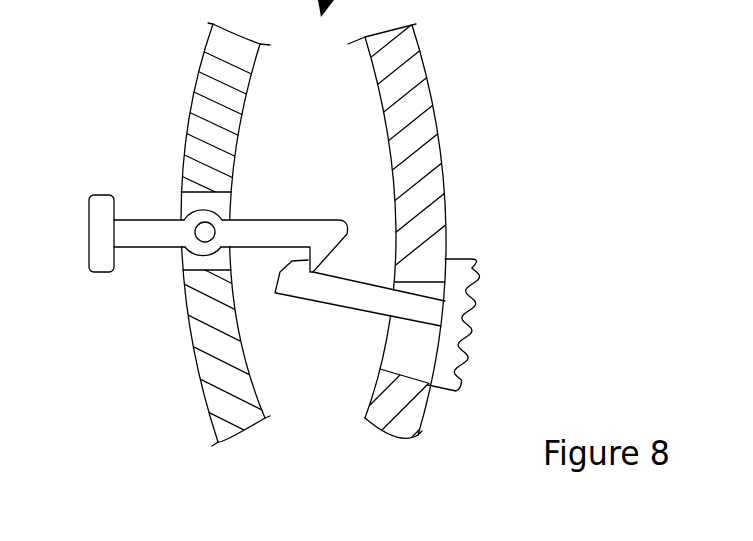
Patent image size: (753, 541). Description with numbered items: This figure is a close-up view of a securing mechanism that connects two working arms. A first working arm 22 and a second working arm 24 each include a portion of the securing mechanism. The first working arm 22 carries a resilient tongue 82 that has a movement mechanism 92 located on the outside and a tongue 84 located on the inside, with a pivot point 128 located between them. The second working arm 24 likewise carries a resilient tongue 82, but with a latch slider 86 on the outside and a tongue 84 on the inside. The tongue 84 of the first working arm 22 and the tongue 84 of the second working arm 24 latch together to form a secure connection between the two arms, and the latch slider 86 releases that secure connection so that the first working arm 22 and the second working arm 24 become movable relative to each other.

The first working arm 22 is at (204, 351).
The second working arm 24 is at (407, 417).
The resilient tongue 82 is at (268, 228).
The tongue 84 is at (307, 260).
The latch slider 86 is at (470, 306).
The movement mechanism 92 is at (112, 192).
The pivot point 128 is at (206, 233).